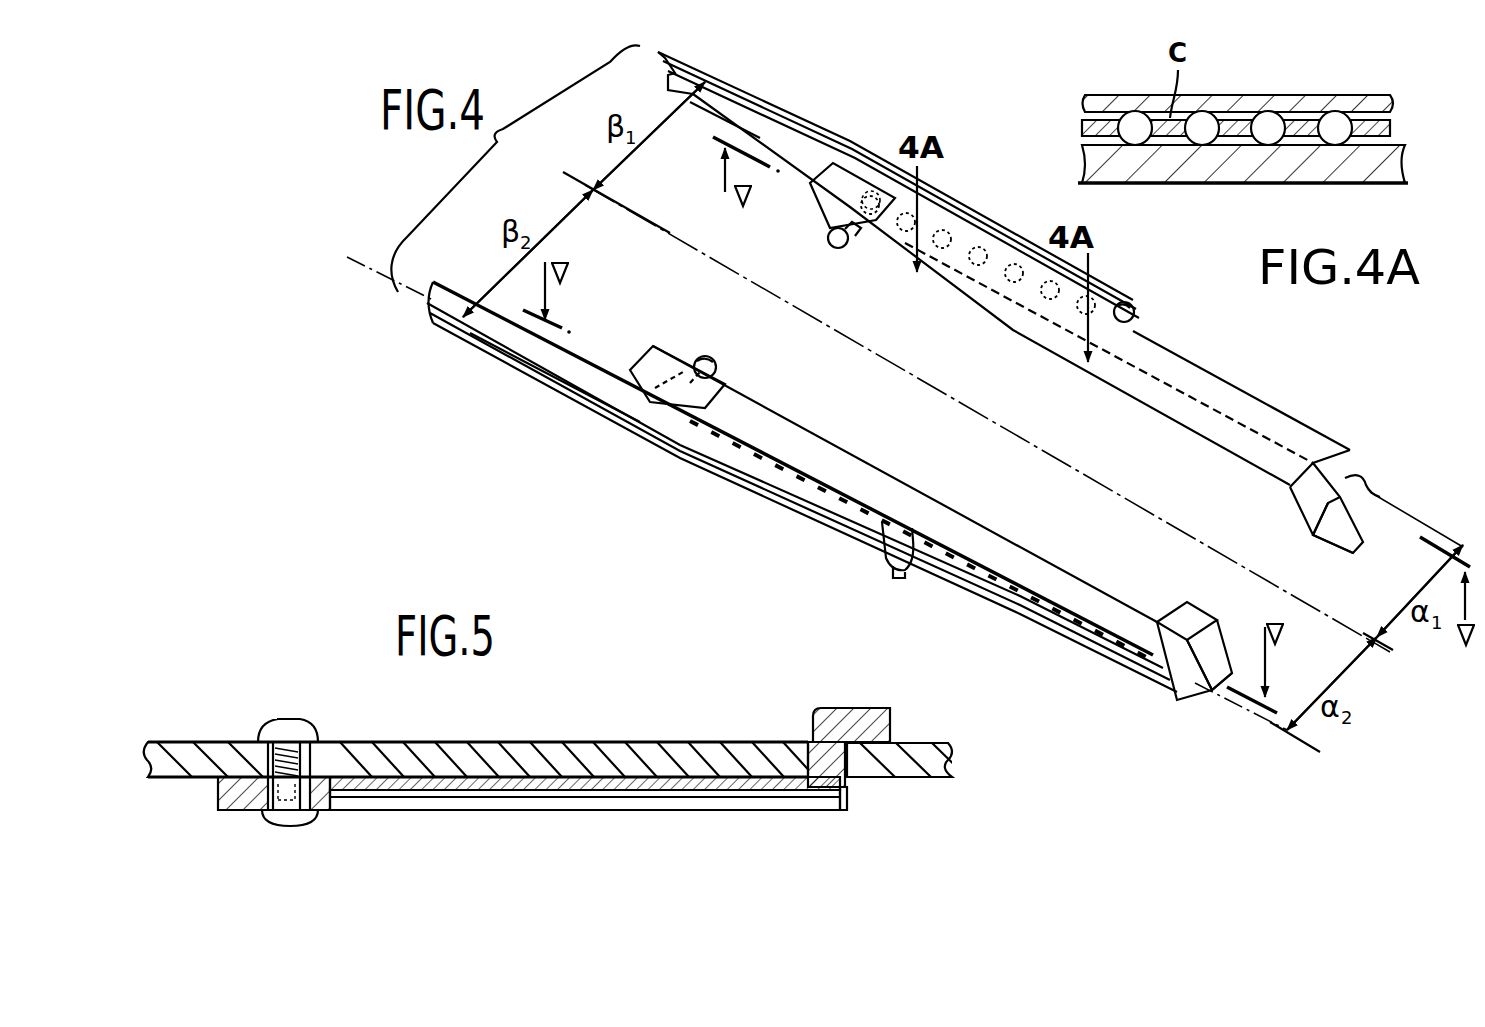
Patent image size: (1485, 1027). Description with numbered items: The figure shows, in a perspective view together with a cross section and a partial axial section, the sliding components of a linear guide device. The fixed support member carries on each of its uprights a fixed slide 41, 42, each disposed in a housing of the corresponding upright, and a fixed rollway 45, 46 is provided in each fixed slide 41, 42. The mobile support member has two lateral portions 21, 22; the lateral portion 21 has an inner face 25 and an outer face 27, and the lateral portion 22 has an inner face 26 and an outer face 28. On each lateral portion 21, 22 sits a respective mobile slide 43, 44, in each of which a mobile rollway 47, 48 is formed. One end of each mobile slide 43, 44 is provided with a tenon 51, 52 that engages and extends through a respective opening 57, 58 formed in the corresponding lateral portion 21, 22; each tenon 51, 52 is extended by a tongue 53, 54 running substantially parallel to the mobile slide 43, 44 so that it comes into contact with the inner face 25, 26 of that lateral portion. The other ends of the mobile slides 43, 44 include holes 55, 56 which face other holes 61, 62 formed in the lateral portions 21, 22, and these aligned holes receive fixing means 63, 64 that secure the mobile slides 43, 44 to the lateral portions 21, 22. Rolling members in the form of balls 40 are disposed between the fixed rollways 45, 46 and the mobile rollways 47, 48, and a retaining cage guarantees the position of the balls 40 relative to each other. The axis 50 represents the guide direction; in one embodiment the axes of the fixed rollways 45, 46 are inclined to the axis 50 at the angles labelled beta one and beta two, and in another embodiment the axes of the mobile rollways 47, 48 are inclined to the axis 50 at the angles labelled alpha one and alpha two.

In FIG. 5, the lateral portion 21 is at (612, 778).
In FIG. 5, the lateral portion 22 is at (612, 778).
In FIG. 5, the inner face 25 is at (612, 778).
In FIG. 5, the inner face 26 is at (612, 778).
In FIG. 5, the outer face 27 is at (612, 778).
In FIG. 5, the outer face 28 is at (932, 745).
In FIG. 4, the balls 40 is at (1010, 258).
In FIG. 4A, the balls 40 is at (1325, 130).
In FIG. 4, the fixed slide 41 is at (1088, 270).
In FIG. 4A, the fixed slide 41 is at (1232, 100).
In FIG. 4, the fixed slide 42 is at (808, 538).
In FIG. 4, the mobile slide 43 is at (1230, 388).
In FIG. 4A, the mobile slide 43 is at (1160, 165).
In FIG. 5, the mobile slide 43 is at (585, 827).
In FIG. 4, the mobile slide 44 is at (1065, 565).
In FIG. 5, the mobile slide 44 is at (527, 785).
In FIG. 4, the fixed rollway 45 is at (1138, 320).
In FIG. 4, the fixed rollway 46 is at (898, 576).
In FIG. 4, the mobile rollway 47 is at (1372, 490).
In FIG. 5, the mobile rollway 47 is at (585, 834).
In FIG. 4, the mobile rollway 48 is at (990, 587).
In FIG. 5, the mobile rollway 48 is at (653, 797).
In FIG. 4, the axis 50 is at (634, 208).
In FIG. 4, the tenon 51 is at (1323, 475).
In FIG. 5, the tenon 51 is at (782, 731).
In FIG. 4, the tenon 52 is at (1185, 612).
In FIG. 5, the tenon 52 is at (822, 752).
In FIG. 4, the tongue 53 is at (1355, 547).
In FIG. 5, the tongue 53 is at (851, 696).
In FIG. 4, the tongue 54 is at (1235, 661).
In FIG. 5, the tongue 54 is at (870, 723).
In FIG. 4, the hole 55 is at (853, 162).
In FIG. 5, the hole 55 is at (309, 827).
In FIG. 4, the hole 56 is at (655, 392).
In FIG. 5, the hole 56 is at (303, 815).
In FIG. 5, the opening 57 is at (840, 832).
In FIG. 5, the opening 58 is at (842, 812).
In FIG. 5, the hole 61 is at (309, 709).
In FIG. 5, the hole 62 is at (302, 736).
In FIG. 4, the fixing means 63 is at (827, 239).
In FIG. 5, the fixing means 63 is at (259, 810).
In FIG. 4, the fixing means 64 is at (703, 357).
In FIG. 5, the fixing means 64 is at (290, 803).